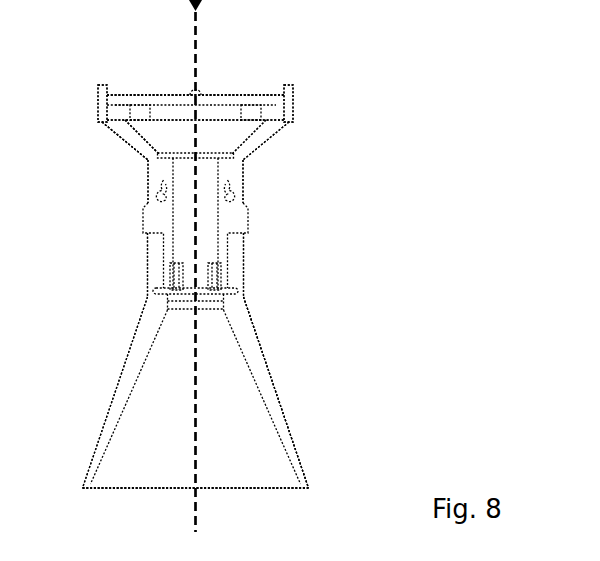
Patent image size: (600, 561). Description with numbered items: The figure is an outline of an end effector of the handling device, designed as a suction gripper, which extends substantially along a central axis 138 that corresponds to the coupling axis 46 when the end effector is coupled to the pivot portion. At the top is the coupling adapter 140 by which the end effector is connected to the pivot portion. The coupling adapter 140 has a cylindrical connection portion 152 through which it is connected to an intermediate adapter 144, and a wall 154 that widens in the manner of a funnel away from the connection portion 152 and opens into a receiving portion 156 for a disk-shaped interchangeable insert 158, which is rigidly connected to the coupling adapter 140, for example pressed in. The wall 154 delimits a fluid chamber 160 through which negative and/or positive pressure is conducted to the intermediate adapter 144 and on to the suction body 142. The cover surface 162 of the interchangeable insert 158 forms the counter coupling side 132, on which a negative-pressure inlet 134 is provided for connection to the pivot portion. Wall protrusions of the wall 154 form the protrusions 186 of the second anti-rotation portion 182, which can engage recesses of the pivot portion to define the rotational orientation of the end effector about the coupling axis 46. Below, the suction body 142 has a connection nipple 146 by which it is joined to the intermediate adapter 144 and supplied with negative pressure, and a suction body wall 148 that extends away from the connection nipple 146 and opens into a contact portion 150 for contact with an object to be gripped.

The counter coupling side 132 is at (163, 98).
The cover surface 162 is at (163, 98).
The protrusions 186 is at (198, 90).
The second anti-rotation portion 182 is at (291, 90).
The negative-pressure inlet 134 is at (140, 112).
The interchangeable insert 158 is at (120, 113).
The receiving portion 156 is at (117, 130).
The fluid chamber 160 is at (191, 148).
The wall 154 is at (260, 133).
The cylindrical connection portion 152 is at (232, 181).
The intermediate adapter 144 is at (236, 218).
The connection nipple 146 is at (272, 271).
The suction body wall 148 is at (252, 352).
The contact portion 150 is at (322, 458).
The coupling adapter 140 is at (361, 127).
The suction body 142 is at (379, 366).
The central axis 138 is at (198, 517).
The coupling axis 46 is at (234, 523).